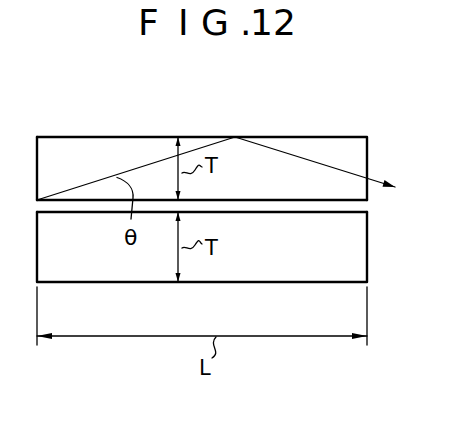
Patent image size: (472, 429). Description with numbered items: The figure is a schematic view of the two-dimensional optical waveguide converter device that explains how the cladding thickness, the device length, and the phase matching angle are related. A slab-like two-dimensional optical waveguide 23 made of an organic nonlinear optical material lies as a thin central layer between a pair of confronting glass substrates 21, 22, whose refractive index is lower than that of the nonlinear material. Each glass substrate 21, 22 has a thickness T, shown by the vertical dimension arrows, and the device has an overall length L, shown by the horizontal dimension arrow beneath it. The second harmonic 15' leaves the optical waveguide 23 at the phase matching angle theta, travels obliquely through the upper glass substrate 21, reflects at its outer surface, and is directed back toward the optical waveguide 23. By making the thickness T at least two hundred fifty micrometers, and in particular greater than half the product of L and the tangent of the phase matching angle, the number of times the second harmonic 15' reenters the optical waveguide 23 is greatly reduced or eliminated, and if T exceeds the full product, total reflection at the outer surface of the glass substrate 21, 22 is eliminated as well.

The second harmonic 15' is at (216, 141).
The glass substrate 21 is at (360, 149).
The glass substrate 22 is at (354, 250).
The two-dimensional optical waveguide 23 is at (360, 205).